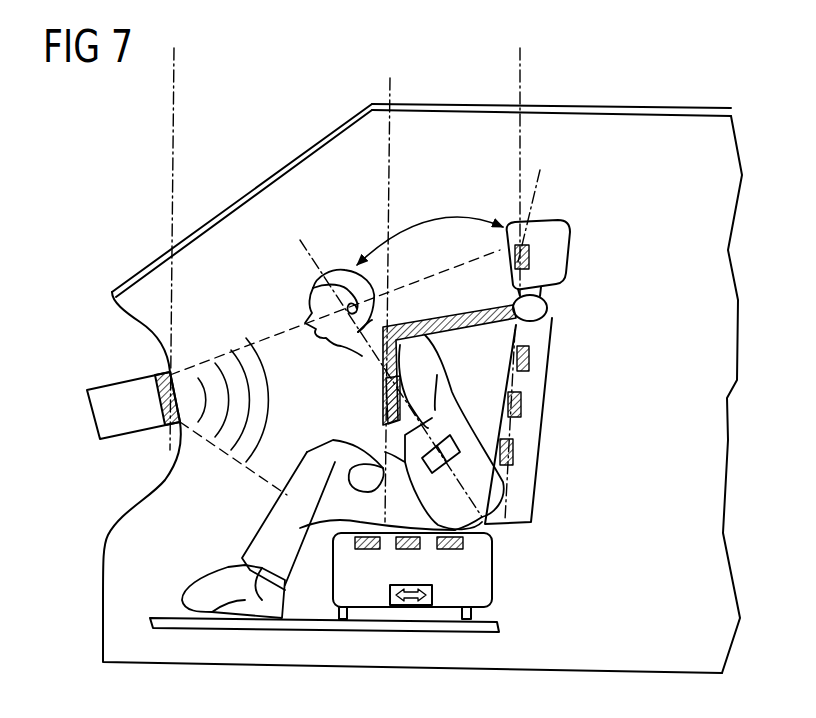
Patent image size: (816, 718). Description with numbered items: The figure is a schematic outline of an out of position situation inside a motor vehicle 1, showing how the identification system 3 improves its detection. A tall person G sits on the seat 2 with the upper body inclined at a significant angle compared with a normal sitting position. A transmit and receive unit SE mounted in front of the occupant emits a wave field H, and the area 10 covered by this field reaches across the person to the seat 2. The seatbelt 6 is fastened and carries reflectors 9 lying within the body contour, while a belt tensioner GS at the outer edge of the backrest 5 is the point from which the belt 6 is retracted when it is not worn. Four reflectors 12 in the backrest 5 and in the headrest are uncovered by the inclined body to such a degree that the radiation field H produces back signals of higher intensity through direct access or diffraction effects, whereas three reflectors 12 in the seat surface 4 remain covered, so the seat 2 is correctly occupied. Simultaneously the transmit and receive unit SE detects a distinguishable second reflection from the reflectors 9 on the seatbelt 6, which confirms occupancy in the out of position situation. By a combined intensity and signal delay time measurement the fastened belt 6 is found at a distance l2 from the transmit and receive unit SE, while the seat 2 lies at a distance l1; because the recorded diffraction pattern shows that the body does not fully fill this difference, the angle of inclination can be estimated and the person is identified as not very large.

The motor vehicle 1 is at (241, 169).
The seat 2 is at (580, 533).
The identification system 3 is at (123, 458).
The seat surface 4 is at (478, 588).
The backrest 5 is at (547, 336).
The seatbelt 6 is at (449, 302).
The reflector 9 is at (383, 408).
The area covered by the wave field 10 is at (240, 363).
The reflector 12 is at (531, 262).
The transmit and receive unit SE is at (122, 398).
The large person G is at (366, 378).
The belt tensioner GS is at (540, 310).
The wave field H is at (296, 413).
The distance between seat and transmit and receive unit l1 is at (176, 57).
The distance between belt and transmit and receive unit l2 is at (176, 85).